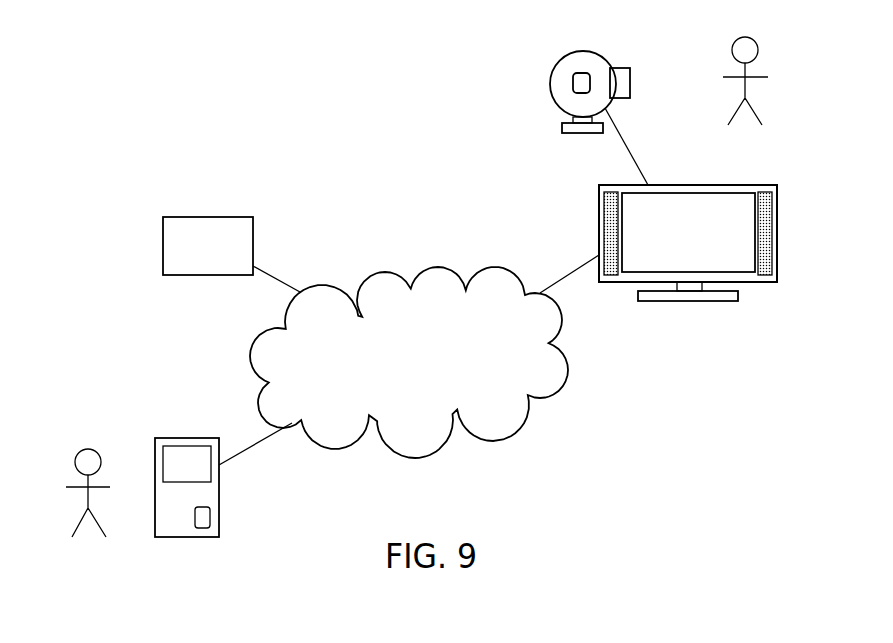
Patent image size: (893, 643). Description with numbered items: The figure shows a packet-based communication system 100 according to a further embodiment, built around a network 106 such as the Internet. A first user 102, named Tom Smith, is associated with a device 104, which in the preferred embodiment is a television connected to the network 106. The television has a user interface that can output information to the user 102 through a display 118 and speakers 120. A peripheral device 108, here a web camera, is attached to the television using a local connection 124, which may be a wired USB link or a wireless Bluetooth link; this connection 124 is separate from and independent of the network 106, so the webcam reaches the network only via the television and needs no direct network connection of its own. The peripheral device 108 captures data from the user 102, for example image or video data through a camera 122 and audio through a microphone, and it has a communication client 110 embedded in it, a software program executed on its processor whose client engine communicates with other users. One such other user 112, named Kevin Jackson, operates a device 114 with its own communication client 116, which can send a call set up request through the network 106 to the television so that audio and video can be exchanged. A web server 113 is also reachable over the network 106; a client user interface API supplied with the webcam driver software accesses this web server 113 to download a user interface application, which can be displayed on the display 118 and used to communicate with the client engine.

The packet-based communication system 100 is at (297, 167).
The user 102 is at (758, 50).
The device 104 is at (689, 257).
The network 106 is at (410, 458).
The peripheral device 108 is at (568, 78).
The communication client 110 is at (582, 73).
The user 112 is at (88, 449).
The web server 113 is at (187, 217).
The device 114 is at (187, 484).
The communication client 116 is at (203, 528).
The display 118 is at (633, 273).
The speakers 120 is at (604, 197).
The camera 122 is at (620, 68).
The local connection 124 is at (627, 138).